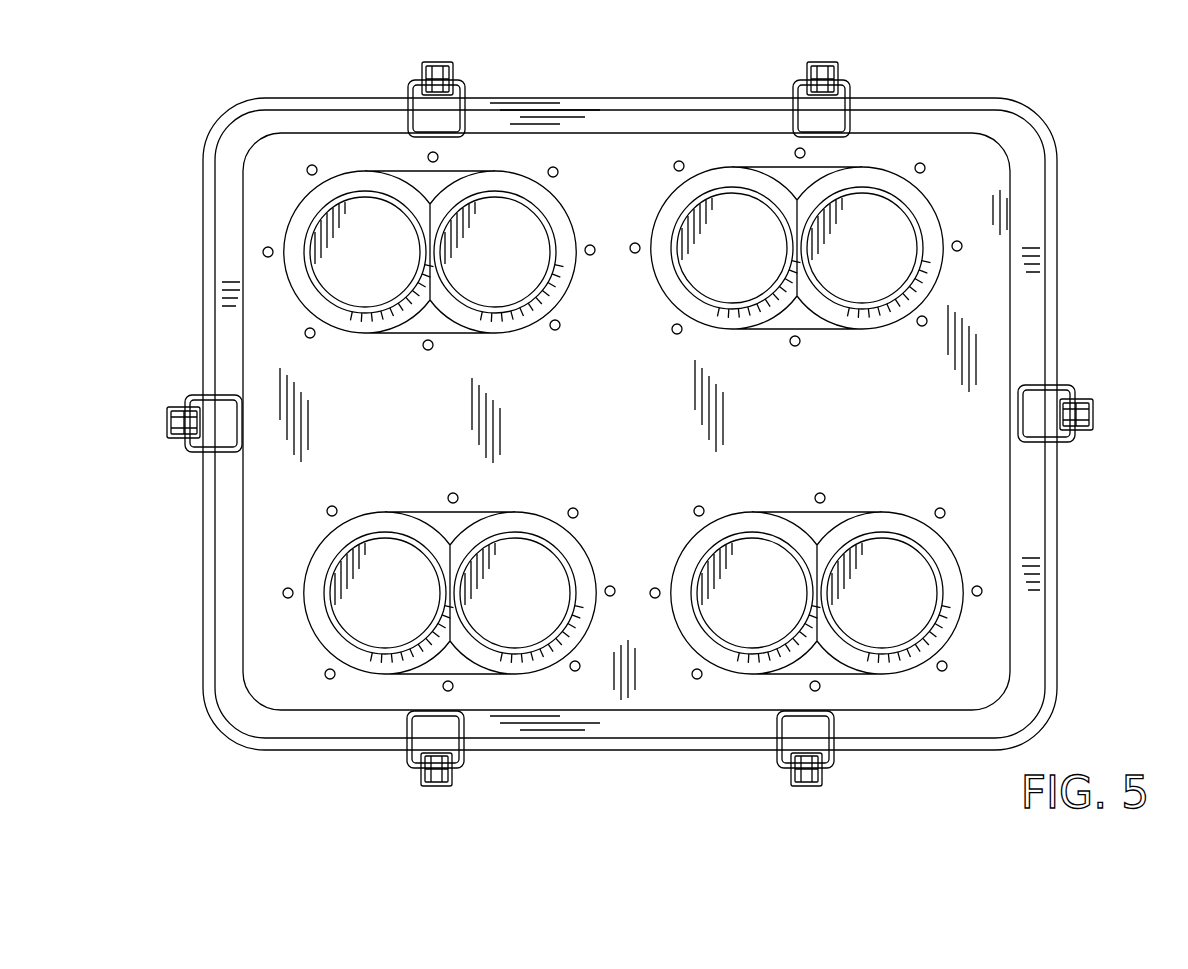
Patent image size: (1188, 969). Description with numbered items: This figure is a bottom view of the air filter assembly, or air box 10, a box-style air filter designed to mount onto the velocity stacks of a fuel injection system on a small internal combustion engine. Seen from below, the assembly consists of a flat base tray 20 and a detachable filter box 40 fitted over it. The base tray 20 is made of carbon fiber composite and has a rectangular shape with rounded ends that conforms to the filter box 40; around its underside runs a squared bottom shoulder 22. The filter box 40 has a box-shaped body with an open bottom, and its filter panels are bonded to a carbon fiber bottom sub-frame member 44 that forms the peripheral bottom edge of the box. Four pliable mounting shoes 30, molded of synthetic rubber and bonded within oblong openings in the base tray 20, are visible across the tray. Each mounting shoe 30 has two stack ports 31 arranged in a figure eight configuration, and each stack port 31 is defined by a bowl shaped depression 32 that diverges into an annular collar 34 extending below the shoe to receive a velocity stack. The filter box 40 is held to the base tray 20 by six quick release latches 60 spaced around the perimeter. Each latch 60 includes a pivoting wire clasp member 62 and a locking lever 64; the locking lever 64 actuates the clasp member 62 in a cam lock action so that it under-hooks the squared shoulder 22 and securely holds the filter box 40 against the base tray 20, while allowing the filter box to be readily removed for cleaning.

The air filter assembly 10 is at (659, 430).
The base tray 20 is at (643, 433).
The squared bottom shoulder 22 is at (588, 98).
The mounting shoe 30 is at (631, 419).
The stack port 31 is at (358, 257).
The bowl shaped depression 32 is at (563, 215).
The annular collar 34 is at (352, 307).
The filter box 40 is at (247, 96).
The bottom sub-frame member 44 is at (228, 124).
The quick release latch 60 is at (659, 429).
The pivoting wire clasp member 62 is at (410, 95).
The locking lever 64 is at (462, 82).